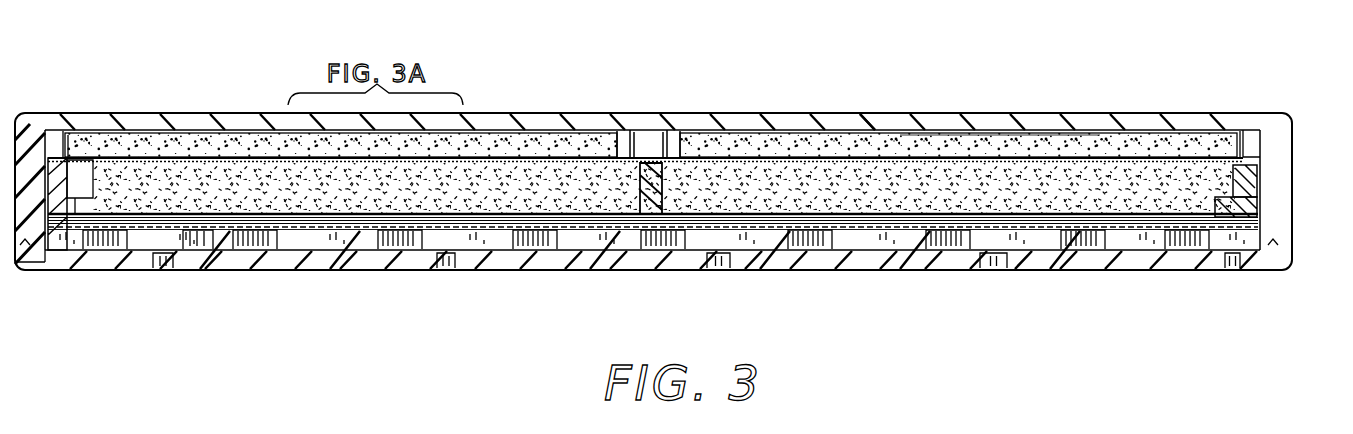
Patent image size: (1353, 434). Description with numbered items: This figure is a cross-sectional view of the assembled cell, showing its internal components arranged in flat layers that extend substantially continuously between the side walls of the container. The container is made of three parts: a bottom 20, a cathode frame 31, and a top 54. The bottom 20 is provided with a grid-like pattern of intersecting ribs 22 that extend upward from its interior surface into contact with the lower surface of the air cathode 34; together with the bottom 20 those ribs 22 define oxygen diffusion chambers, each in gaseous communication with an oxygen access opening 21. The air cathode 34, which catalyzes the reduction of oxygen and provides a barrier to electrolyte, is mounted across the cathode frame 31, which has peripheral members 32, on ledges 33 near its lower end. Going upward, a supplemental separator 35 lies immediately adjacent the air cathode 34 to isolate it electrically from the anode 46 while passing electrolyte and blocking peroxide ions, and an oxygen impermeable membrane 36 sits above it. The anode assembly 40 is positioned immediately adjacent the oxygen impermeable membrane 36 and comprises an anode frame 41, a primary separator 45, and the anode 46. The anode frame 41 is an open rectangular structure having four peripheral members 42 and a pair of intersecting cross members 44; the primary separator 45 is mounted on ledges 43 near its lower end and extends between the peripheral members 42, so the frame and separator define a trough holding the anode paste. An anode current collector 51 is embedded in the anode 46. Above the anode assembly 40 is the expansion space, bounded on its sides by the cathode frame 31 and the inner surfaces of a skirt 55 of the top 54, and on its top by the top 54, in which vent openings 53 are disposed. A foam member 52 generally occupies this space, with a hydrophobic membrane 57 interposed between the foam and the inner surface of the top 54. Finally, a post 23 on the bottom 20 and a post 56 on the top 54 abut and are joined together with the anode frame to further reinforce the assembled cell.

The bottom 20 is at (395, 265).
The oxygen access opening 21 is at (448, 262).
The ribs 22 is at (520, 255).
The post 23 is at (635, 245).
The cathode frame 31 is at (45, 245).
The peripheral members 32 is at (35, 172).
The ledges 33 is at (68, 250).
The air cathode 34 is at (200, 238).
The supplemental separator 35 is at (240, 238).
The oxygen impermeable membrane 36 is at (280, 225).
The anode assembly 40 is at (1252, 143).
The anode frame 41 is at (1265, 210).
The peripheral members 42 is at (1265, 176).
The ledges 43 is at (1225, 215).
The cross members 44 is at (660, 210).
The primary separator 45 is at (1185, 212).
The anode 46 is at (1138, 205).
The anode current collector 51 is at (1155, 160).
The foam member 52 is at (1195, 145).
The vent openings 53 is at (886, 115).
The top 54 is at (1122, 113).
The skirt 55 is at (1290, 120).
The post 56 is at (650, 140).
The hydrophobic membrane 57 is at (1033, 135).